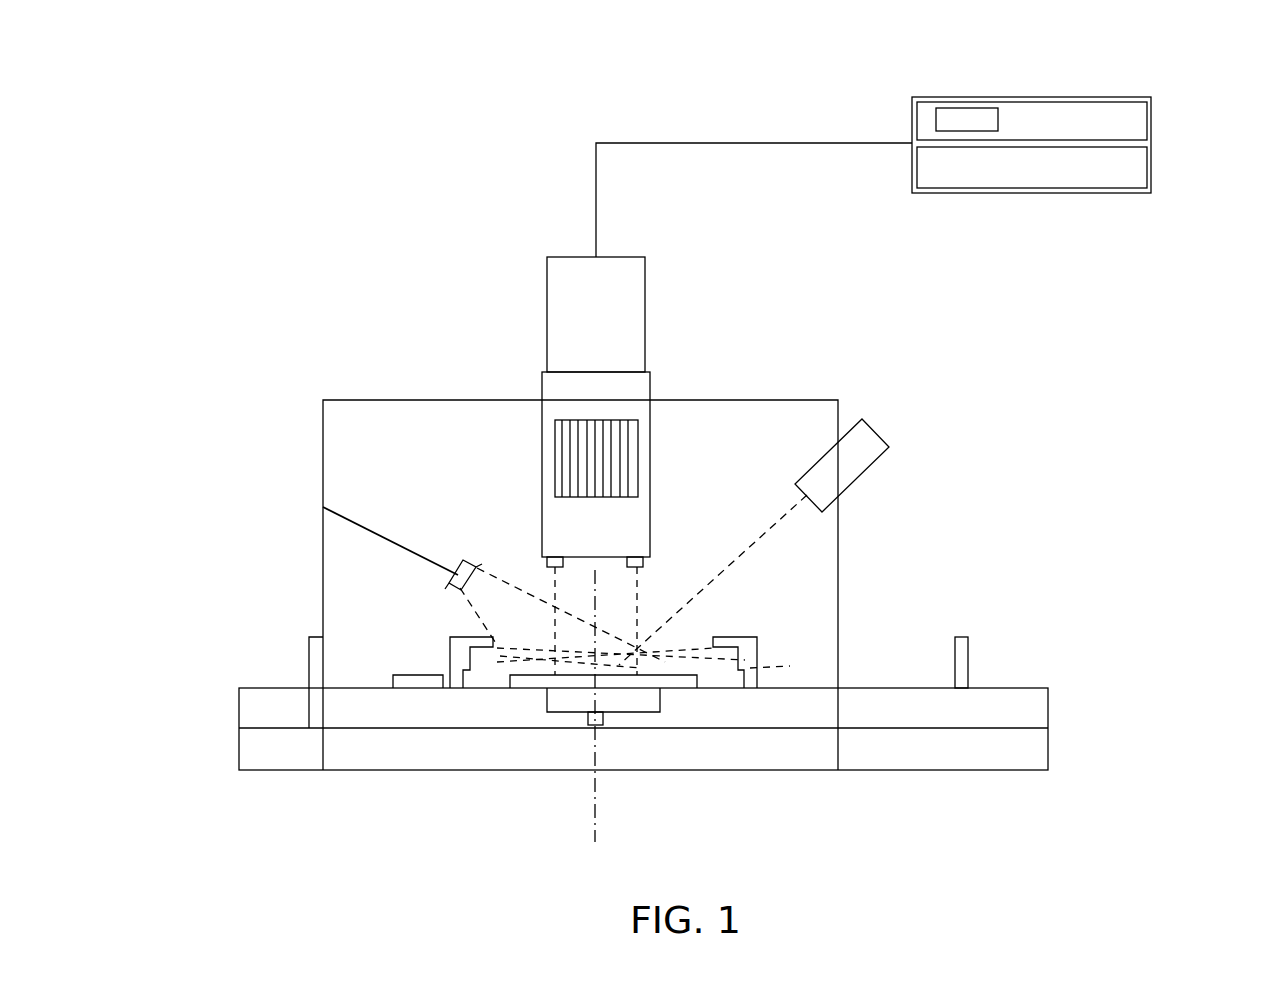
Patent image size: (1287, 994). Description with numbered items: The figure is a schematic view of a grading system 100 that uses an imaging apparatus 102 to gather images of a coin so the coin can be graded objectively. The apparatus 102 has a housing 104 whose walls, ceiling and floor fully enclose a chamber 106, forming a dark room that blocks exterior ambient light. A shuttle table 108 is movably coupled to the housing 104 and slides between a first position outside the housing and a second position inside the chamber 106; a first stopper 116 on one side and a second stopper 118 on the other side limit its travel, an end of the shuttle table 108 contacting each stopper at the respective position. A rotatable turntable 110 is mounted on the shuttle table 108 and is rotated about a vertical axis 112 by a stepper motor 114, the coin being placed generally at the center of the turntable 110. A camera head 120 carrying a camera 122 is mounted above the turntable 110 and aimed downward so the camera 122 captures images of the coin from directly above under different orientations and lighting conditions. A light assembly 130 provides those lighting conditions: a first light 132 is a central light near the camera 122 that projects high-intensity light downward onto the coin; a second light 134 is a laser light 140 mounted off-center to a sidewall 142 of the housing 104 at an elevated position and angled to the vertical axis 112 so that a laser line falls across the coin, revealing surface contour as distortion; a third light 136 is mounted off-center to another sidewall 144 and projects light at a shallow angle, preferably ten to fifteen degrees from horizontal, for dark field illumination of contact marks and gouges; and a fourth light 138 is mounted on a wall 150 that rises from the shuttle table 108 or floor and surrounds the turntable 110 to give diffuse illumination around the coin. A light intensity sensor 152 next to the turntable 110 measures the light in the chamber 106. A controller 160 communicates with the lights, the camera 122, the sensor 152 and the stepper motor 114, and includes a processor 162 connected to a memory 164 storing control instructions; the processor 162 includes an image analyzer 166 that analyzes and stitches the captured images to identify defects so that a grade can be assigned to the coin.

The grading system 100 is at (496, 66).
The imaging apparatus 102 is at (292, 390).
The housing 104 is at (292, 468).
The chamber 106 is at (662, 530).
The shuttle table 108 is at (353, 688).
The turntable 110 is at (512, 676).
The vertical axis 112 is at (598, 792).
The stepper motor 114 is at (590, 722).
The first stopper 116 is at (968, 662).
The second stopper 118 is at (308, 672).
The laser head 120 is at (651, 480).
The camera 122 is at (651, 423).
The light assembly 130 is at (880, 485).
The first light 132 is at (647, 563).
The second light 134 is at (864, 418).
The third light 136 is at (452, 578).
The fourth light 138 is at (478, 642).
The laser light 140 is at (882, 434).
The sidewall 142 is at (840, 617).
The sidewall 144 is at (322, 587).
The wall 150 is at (758, 663).
The light intensity sensor 152 is at (393, 688).
The controller 160 is at (1060, 95).
The processor 162 is at (1122, 97).
The memory 164 is at (1147, 168).
The image analyzer 166 is at (967, 108).